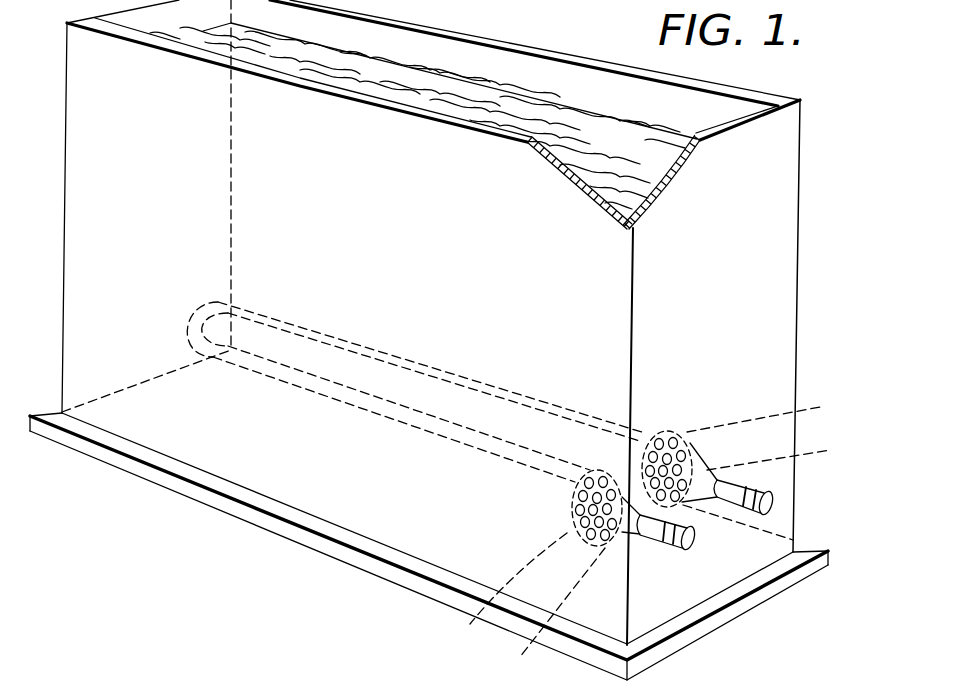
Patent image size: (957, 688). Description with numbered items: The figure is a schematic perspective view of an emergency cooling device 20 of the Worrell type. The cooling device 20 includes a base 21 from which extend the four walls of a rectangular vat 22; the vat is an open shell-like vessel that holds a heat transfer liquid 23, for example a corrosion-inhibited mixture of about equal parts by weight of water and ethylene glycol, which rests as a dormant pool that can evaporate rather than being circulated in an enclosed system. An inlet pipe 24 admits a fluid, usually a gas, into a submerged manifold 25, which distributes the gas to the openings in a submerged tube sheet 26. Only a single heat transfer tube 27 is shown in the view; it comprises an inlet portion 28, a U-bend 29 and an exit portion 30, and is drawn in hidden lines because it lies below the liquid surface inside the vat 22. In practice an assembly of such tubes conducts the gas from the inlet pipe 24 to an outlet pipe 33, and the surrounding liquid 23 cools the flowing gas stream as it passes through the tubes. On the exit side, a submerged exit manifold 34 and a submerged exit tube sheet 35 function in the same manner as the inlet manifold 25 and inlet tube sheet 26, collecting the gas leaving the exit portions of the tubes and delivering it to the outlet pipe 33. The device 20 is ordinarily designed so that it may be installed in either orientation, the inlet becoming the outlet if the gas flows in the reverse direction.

The emergency cooling device 20 is at (454, 340).
The base 21 is at (327, 546).
The rectangular vat 22 is at (785, 326).
The heat transfer liquid 23 is at (445, 80).
The inlet pipe 24 is at (693, 545).
The submerged manifold 25 is at (548, 615).
The submerged tube sheet 26 is at (506, 594).
The heat transfer tube 27 is at (379, 384).
The inlet portion 28 is at (572, 476).
The U-bend 29 is at (188, 316).
The exit portion 30 is at (645, 436).
The outlet pipe 33 is at (771, 504).
The submerged exit manifold 34 is at (771, 489).
The submerged exit tube sheet 35 is at (768, 413).